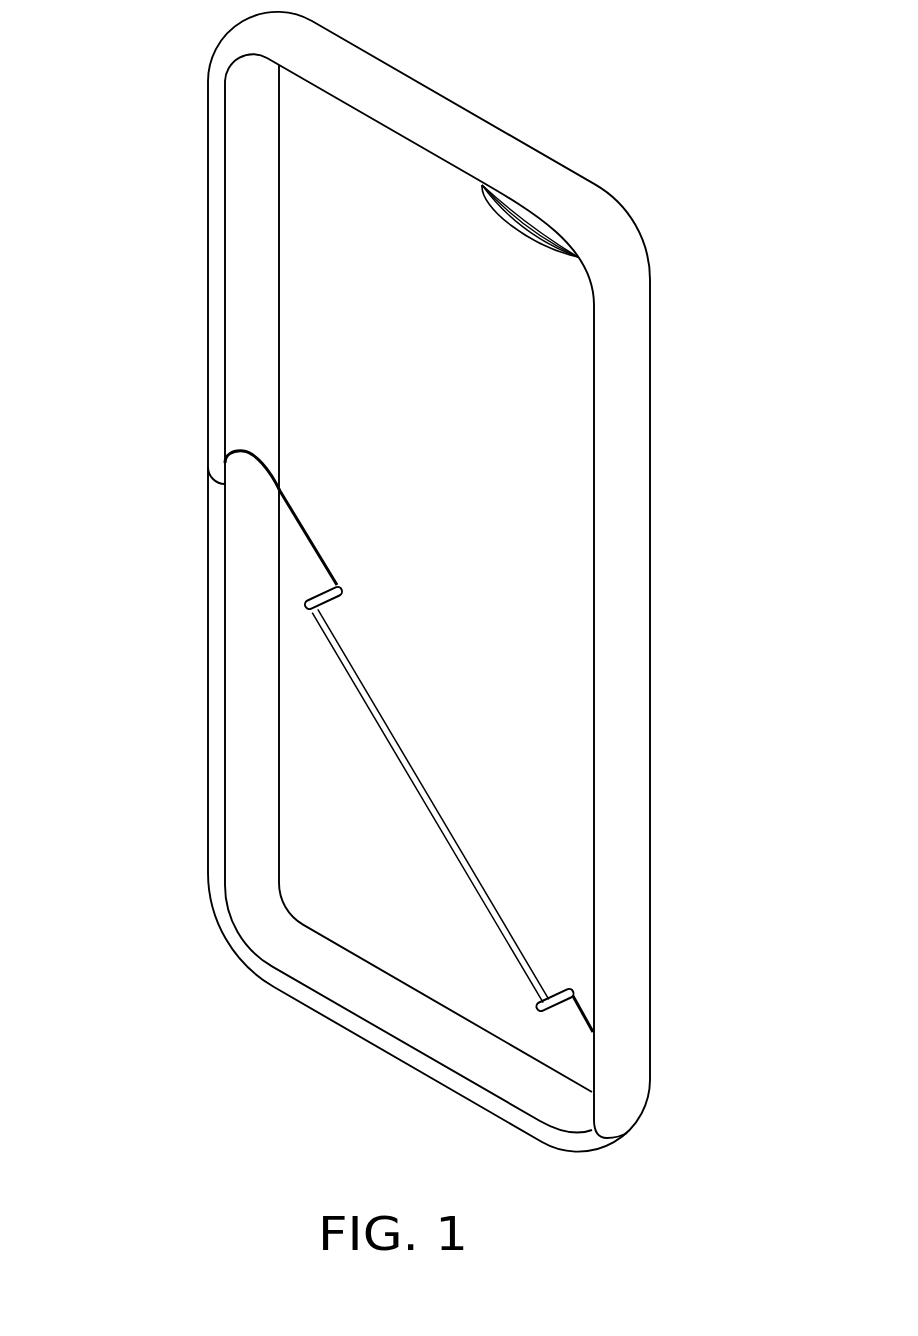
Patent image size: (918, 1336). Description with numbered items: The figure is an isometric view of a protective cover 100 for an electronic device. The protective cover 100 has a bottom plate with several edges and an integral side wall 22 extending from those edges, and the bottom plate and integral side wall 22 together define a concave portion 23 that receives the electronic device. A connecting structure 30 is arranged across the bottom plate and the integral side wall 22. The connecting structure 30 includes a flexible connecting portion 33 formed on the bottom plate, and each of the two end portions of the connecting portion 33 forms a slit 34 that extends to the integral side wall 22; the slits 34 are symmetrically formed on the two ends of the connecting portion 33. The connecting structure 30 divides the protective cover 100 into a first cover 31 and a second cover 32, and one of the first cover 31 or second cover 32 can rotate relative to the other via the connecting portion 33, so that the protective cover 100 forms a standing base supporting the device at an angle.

The protective cover 100 is at (483, 62).
The integral side wall 22 is at (618, 487).
The concave portion 23 is at (478, 365).
The connecting structure 30 is at (120, 515).
The first cover 31 is at (555, 853).
The second cover 32 is at (427, 1030).
The flexible connecting portion 33 is at (360, 706).
The slit 34 is at (290, 504).